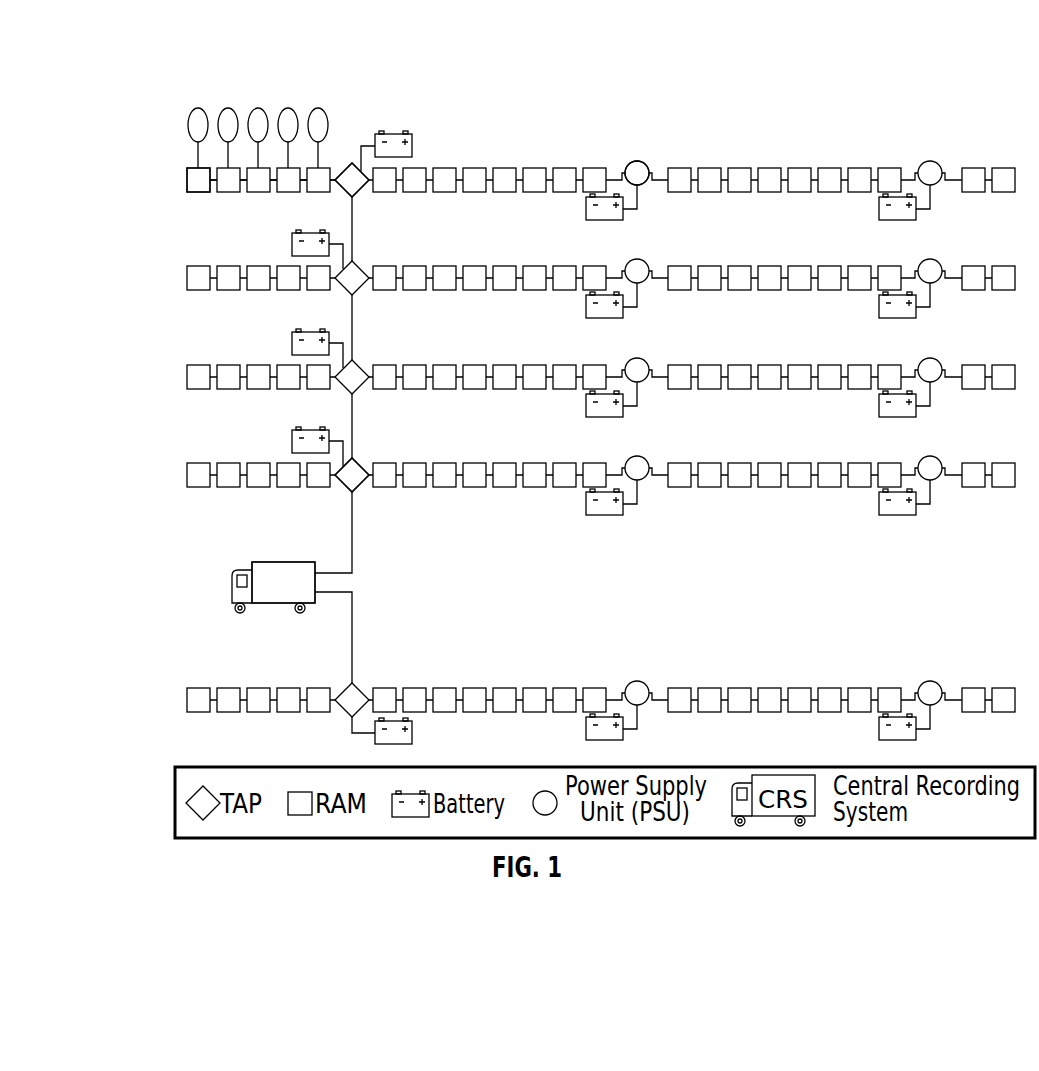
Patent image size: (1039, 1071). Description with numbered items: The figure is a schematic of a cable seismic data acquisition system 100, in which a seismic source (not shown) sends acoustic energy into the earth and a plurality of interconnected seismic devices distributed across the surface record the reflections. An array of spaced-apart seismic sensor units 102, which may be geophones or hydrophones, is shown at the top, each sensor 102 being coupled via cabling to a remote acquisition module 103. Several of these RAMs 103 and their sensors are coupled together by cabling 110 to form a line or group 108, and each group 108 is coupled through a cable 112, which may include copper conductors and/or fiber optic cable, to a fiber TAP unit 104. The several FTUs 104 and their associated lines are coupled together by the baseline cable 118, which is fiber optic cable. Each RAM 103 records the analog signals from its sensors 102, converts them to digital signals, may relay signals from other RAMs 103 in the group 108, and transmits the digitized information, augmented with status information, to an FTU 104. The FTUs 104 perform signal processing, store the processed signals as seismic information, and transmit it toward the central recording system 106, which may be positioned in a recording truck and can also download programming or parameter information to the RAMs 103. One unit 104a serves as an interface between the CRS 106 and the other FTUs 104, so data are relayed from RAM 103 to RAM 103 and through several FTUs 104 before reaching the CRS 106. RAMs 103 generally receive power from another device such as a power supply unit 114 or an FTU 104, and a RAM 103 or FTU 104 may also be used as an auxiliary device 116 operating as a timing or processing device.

The cable seismic data acquisition system 100 is at (118, 80).
The seismic sensor unit 102 is at (188, 125).
The remote acquisition module (RAM) 103 is at (187, 176).
The fiber TAP unit (FTU) 104 is at (343, 190).
The interface FTU unit 104a is at (345, 488).
The central recording system (CRS) 106 is at (230, 593).
The group 108 is at (328, 302).
The cabling 110 is at (214, 184).
The cable 112 is at (333, 173).
The power supply unit (PSU) 114 is at (637, 160).
The auxiliary device 116 is at (248, 565).
The baseline cable 118 is at (352, 331).